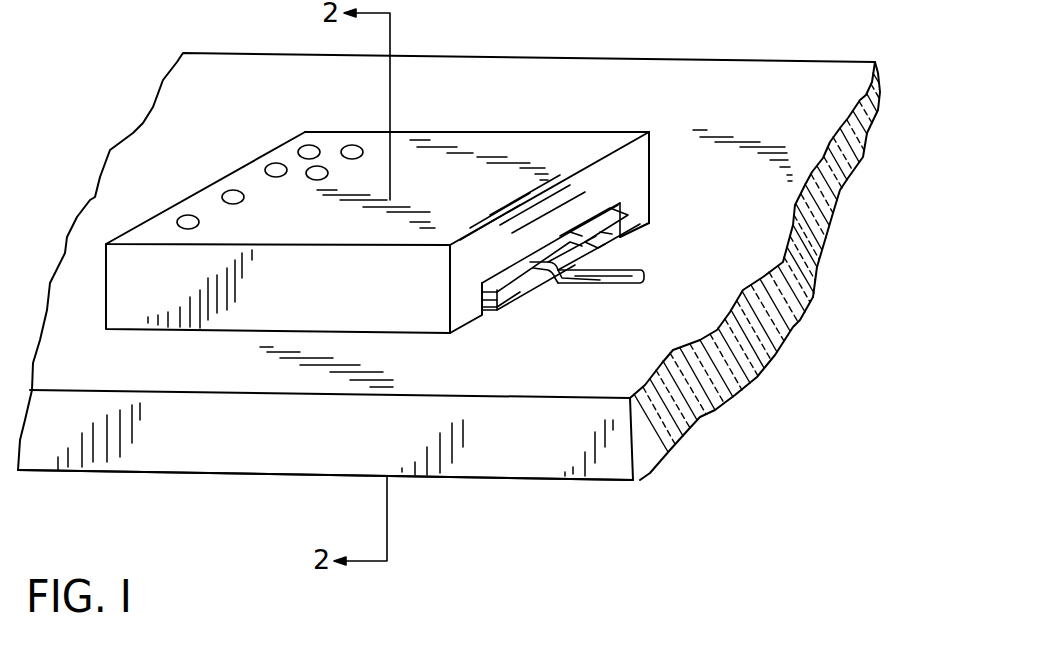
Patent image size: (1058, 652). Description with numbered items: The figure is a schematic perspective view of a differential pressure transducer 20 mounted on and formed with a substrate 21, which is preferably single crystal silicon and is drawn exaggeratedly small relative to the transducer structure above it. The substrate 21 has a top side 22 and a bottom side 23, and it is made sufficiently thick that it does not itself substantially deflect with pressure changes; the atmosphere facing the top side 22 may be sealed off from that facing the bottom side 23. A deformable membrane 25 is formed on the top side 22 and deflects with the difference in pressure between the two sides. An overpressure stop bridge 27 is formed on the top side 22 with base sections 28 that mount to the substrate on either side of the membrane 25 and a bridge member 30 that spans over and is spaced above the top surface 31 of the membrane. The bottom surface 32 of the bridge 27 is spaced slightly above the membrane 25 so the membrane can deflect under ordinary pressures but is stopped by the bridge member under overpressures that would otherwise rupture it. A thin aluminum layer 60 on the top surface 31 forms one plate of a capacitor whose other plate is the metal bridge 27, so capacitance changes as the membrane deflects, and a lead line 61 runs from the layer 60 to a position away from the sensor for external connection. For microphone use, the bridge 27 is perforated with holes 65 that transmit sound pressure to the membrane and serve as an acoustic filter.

The differential pressure transducer 20 is at (603, 121).
The substrate 21 is at (203, 470).
The top side of the substrate 22 is at (777, 78).
The bottom side of the substrate 23 is at (551, 480).
The deformable membrane 25 is at (600, 248).
The overpressure stop bridge 27 is at (540, 131).
The base sections 28 is at (643, 200).
The bridge member 30 is at (483, 150).
The top surface of the membrane 31 is at (597, 235).
The bottom surface of the bridge 32 is at (507, 277).
The conducting layer 60 is at (538, 255).
The lead line 61 is at (607, 287).
The holes 65 is at (309, 170).